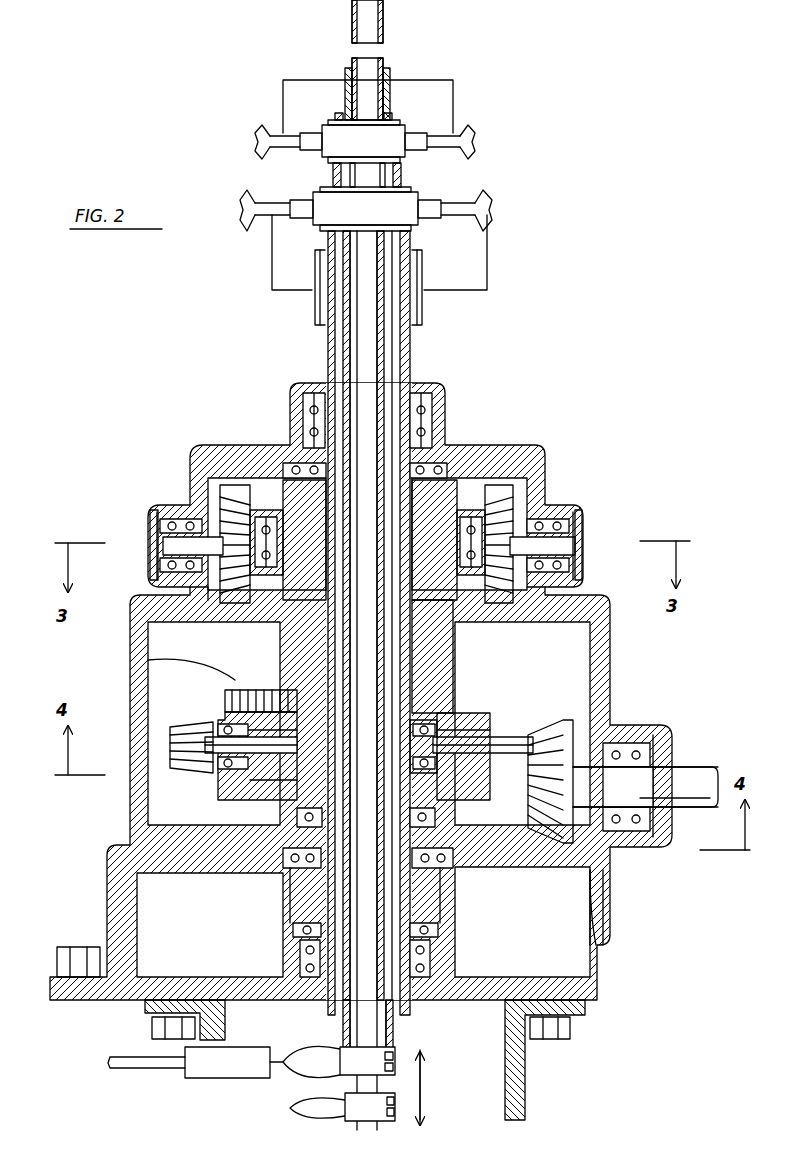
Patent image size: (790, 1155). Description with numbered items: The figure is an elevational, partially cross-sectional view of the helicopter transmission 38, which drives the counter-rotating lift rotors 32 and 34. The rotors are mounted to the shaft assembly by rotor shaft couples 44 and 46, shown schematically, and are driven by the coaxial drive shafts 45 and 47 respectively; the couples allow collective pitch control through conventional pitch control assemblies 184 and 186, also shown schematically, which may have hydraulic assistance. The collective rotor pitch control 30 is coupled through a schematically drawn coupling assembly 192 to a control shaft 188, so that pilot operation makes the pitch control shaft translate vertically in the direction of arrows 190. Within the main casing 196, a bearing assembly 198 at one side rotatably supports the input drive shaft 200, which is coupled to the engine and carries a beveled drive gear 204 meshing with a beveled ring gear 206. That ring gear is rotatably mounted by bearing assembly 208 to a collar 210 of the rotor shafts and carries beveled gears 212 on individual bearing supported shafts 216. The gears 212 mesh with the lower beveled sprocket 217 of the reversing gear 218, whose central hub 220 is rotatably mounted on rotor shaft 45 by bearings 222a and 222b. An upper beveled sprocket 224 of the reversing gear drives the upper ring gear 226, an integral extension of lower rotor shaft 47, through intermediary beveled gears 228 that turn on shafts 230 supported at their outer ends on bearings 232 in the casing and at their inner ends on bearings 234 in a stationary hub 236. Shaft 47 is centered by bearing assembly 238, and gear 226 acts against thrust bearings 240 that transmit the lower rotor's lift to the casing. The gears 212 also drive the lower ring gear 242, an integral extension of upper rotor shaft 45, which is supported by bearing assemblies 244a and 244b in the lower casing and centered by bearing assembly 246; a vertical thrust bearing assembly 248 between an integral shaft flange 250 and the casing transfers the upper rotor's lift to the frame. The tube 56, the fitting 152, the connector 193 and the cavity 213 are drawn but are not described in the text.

The collective rotor pitch control 30 is at (135, 1062).
The lift rotor 32 is at (450, 132).
The lift rotor 34 is at (490, 201).
The transmission 38 is at (637, 432).
The rotor shaft couple 44 is at (420, 112).
The drive shaft 45 is at (333, 174).
The rotor shaft couple 46 is at (437, 183).
The drive shaft 47 is at (328, 241).
The upper tube 56 is at (383, 16).
The connector 152 is at (292, 1112).
The pitch control assembly 184 is at (283, 80).
The pitch control assembly 186 is at (272, 291).
The control shaft 188 is at (345, 72).
The arrows 190 is at (420, 1086).
The coupling assembly 192 is at (205, 1070).
The connector 193 is at (315, 1055).
The main casing 196 is at (470, 455).
The bearing assembly 198 is at (612, 748).
The input drive shaft 200 is at (680, 778).
The beveled drive gear 204 is at (543, 857).
The beveled ring gear 206 is at (220, 735).
The bearing assembly 208 is at (240, 760).
The collar 210 is at (250, 812).
The beveled gears 212 is at (240, 730).
The cavity 213 is at (268, 666).
The bearing supported shafts 216 is at (165, 790).
The lower beveled sprocket 217 is at (235, 720).
The reversing gear 218 is at (470, 690).
The central hub 220 is at (235, 695).
The bearing 222a is at (148, 660).
The bearing 222b is at (236, 682).
The upper beveled sprocket 224 is at (190, 597).
The upper ring gear 226 is at (235, 510).
The intermediary beveled gears 228 is at (200, 540).
The shafts 230 is at (170, 542).
The bearings 232 is at (162, 522).
The bearings 234 is at (268, 490).
The stationary hub 236 is at (262, 517).
The bearing assembly 238 is at (303, 400).
The thrust bearings 240 is at (305, 463).
The lower ring gear 242 is at (235, 805).
The bearing assembly 244a is at (290, 868).
The bearing assembly 244b is at (285, 925).
The bearing assembly 246 is at (300, 958).
The vertical thrust bearing assembly 248 is at (283, 900).
The integral shaft flange 250 is at (440, 900).